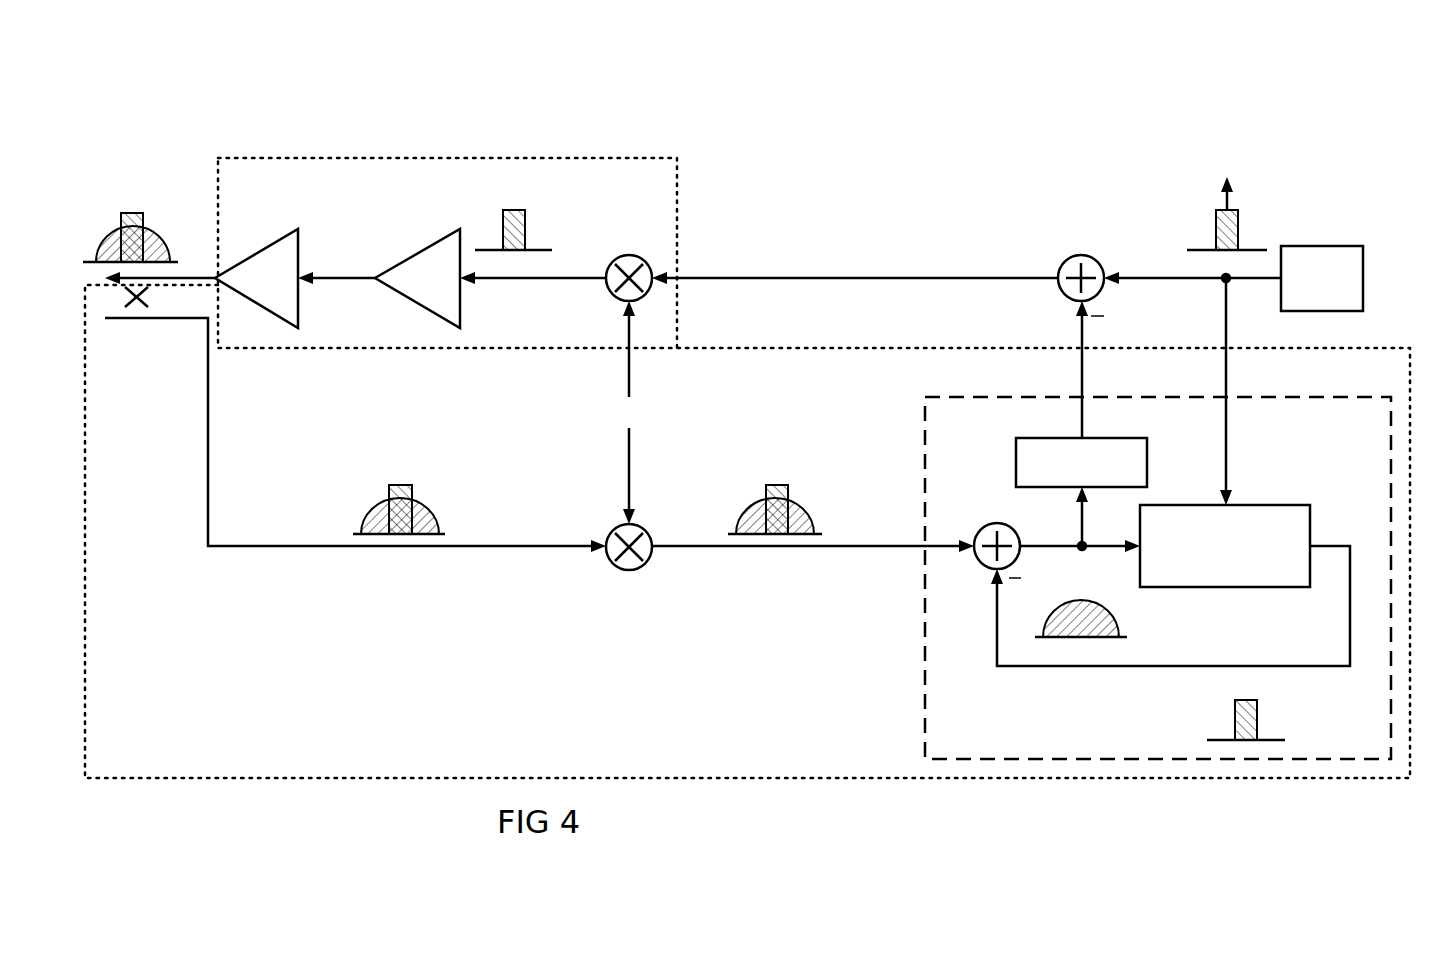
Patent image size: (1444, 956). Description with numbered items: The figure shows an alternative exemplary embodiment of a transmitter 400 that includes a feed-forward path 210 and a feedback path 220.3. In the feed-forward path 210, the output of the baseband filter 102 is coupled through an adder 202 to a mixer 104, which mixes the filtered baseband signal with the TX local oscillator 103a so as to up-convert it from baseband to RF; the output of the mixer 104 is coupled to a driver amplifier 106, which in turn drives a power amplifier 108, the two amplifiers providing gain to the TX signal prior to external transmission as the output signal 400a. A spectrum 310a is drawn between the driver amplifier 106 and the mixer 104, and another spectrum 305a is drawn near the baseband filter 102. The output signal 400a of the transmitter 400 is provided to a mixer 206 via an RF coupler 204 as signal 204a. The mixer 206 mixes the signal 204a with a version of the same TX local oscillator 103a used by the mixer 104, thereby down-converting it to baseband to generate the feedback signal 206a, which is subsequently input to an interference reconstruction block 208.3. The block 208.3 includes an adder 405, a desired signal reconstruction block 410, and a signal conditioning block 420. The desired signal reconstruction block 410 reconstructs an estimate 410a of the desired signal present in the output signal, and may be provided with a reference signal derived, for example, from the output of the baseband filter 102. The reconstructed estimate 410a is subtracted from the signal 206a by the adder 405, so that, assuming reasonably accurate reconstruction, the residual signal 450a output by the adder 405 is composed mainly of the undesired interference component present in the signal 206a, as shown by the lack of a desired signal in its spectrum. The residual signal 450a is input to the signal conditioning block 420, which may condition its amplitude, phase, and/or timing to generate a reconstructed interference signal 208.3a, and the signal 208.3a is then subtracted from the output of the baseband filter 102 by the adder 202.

The transmitter 400 is at (1266, 104).
The output signal 400a is at (131, 211).
The power amplifier 108 is at (283, 238).
The driver amplifier 106 is at (430, 245).
The upconverted signal spectrum 310a is at (514, 208).
The mixer 104 is at (622, 257).
The TX local oscillator 103a is at (632, 384).
The feed-forward path 210 is at (427, 157).
The feedback path 220.3 is at (791, 348).
The RF coupler 204 is at (150, 322).
The signal 204a is at (402, 485).
The mixer 206 is at (628, 571).
The feedback signal 206a is at (778, 485).
The adder 202 is at (1078, 256).
The baseband reference signal spectrum 305a is at (1223, 181).
The baseband filter 102 is at (1318, 246).
The reconstructed interference signal 208.3a is at (1080, 375).
The signal conditioning block 420 is at (1121, 438).
The adder 405 is at (993, 523).
The residual signal 450a is at (1059, 549).
The desired signal reconstruction block 410 is at (1278, 505).
The reconstructed estimate 410a is at (1250, 700).
The interference reconstruction block 208.3 is at (924, 728).